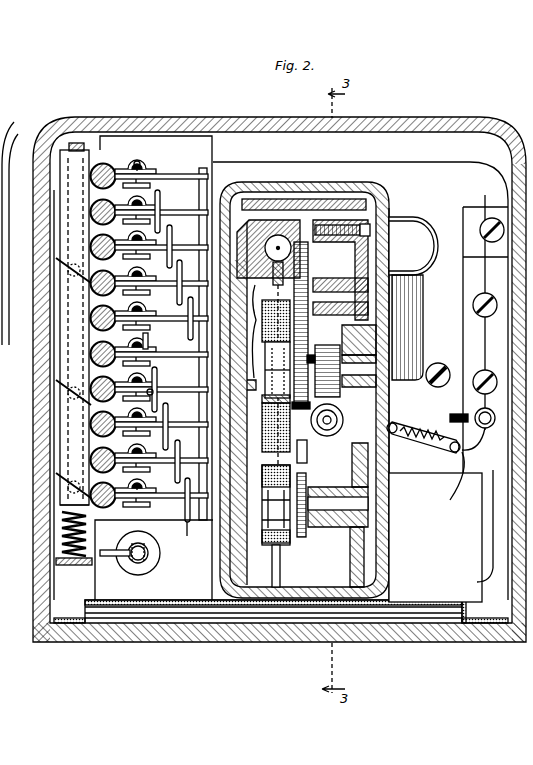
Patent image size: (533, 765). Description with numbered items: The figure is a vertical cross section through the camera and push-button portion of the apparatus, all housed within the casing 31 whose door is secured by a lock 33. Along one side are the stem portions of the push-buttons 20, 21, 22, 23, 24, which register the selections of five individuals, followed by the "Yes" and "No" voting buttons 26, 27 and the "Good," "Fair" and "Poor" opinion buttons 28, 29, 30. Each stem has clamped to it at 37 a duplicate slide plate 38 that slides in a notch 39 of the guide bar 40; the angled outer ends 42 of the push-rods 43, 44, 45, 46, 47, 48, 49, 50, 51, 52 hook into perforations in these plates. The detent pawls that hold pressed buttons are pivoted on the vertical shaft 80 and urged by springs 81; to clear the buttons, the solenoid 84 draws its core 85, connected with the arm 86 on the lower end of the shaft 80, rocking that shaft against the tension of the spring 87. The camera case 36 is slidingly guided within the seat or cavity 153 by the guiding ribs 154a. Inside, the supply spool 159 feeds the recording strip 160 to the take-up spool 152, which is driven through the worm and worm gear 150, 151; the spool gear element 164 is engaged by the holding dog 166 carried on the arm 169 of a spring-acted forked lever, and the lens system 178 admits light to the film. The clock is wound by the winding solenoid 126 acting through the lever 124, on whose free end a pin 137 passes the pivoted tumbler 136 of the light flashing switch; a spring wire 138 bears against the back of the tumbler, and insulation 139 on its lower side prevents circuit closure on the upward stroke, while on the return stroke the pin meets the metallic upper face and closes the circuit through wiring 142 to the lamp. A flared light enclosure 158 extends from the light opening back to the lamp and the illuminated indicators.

The push-button 20 is at (108, 167).
The push-button 21 is at (92, 206).
The push-button 22 is at (92, 243).
The push-button 23 is at (92, 279).
The push-button 24 is at (92, 316).
The "Yes" voting button 26 is at (92, 350).
The "No" voting button 27 is at (92, 385).
The "Good" opinion expressing button 28 is at (92, 420).
The "Fair" opinion expressing button 29 is at (92, 456).
The "Poor" opinion expressing button 30 is at (92, 492).
The casing 31 is at (481, 124).
The lock 33 is at (154, 557).
The camera case 36 is at (380, 574).
The clamp 37 is at (148, 168).
The slide plate 38 is at (200, 178).
The notch 39 is at (208, 195).
The guide bar 40 is at (224, 184).
The angled outer end 42 is at (188, 536).
The push-rod 43 is at (140, 162).
The push-rod 44 is at (161, 196).
The push-rod 45 is at (173, 233).
The push-rod 46 is at (178, 282).
The push-rod 47 is at (189, 318).
The push-rod 48 is at (148, 340).
The push-rod 49 is at (158, 372).
The push-rod 50 is at (169, 408).
The push-rod 51 is at (176, 457).
The push-rod 52 is at (186, 494).
The vertical shaft 80 is at (76, 143).
The spring 81 is at (67, 265).
The solenoid 84 is at (156, 568).
The core 85 is at (128, 548).
The arm 86 is at (80, 566).
The spring 87 is at (62, 540).
The lever 124 is at (438, 460).
The winding solenoid 126 is at (412, 335).
The tumbler 136 is at (438, 388).
The pin 137 is at (460, 517).
The spring wire 138 is at (478, 447).
The insulation 139 is at (450, 420).
The wiring 142 is at (482, 194).
The worm 150 is at (428, 445).
The worm gear 151 is at (395, 340).
The take-up spool 152 is at (270, 435).
The seat or cavity 153 is at (383, 190).
The guiding rib 154a is at (285, 193).
The flared light enclosure 158 is at (408, 240).
The supply spool 159 is at (285, 566).
The recording strip 160 is at (154, 392).
The gear element 164 is at (292, 537).
The holding pawl or dog 166 is at (330, 436).
The arm 169 is at (322, 458).
The lens system 178 is at (277, 236).